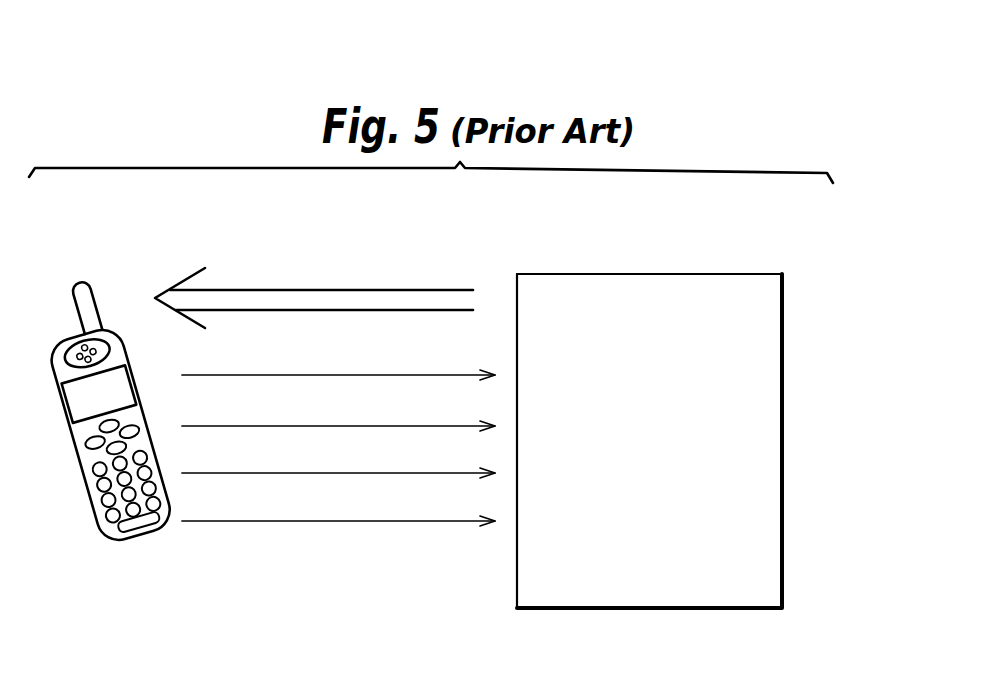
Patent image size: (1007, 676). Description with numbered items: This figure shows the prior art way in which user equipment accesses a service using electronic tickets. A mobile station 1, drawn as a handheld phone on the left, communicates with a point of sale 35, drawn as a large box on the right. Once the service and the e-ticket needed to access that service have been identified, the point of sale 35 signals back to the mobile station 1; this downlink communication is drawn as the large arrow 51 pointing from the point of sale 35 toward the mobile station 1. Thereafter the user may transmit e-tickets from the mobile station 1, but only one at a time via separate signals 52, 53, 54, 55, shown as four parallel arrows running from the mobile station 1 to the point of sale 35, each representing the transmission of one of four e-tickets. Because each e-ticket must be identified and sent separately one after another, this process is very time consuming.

The mobile station 1 is at (133, 541).
The point of sale 35 is at (782, 428).
The downlink signal arrow 51 is at (299, 290).
The signal 52 is at (276, 375).
The signal 53 is at (350, 426).
The signal 54 is at (353, 473).
The signal 55 is at (248, 522).